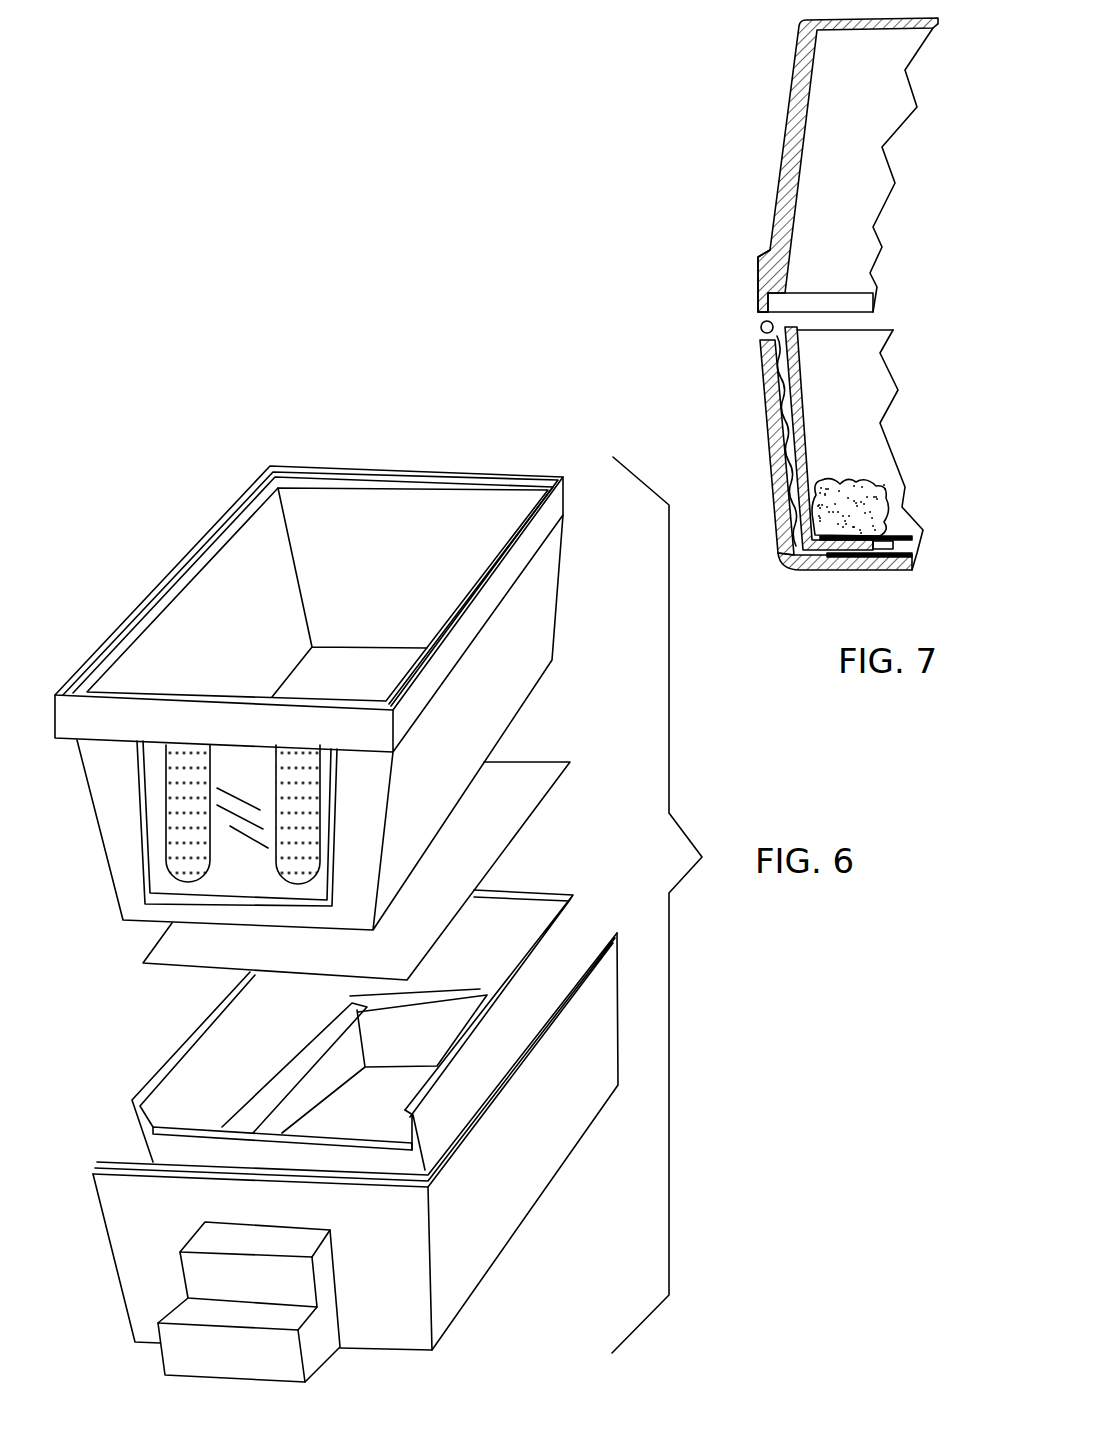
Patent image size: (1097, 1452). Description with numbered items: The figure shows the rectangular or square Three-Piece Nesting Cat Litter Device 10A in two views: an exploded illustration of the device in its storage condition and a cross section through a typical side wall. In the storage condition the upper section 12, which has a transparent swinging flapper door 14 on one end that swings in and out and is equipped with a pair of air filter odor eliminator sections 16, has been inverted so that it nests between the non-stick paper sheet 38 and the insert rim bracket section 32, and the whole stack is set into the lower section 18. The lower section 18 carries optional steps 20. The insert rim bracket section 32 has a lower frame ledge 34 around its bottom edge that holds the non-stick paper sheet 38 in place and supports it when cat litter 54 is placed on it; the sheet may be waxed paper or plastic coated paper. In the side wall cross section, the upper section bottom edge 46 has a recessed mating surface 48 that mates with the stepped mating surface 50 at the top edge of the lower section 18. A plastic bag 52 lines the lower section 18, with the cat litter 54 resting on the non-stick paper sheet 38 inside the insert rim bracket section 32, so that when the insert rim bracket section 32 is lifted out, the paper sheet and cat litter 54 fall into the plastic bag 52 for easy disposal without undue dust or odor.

In FIG. 6, the Three-Piece Nesting Cat Litter Device 10A is at (188, 490).
In FIG. 6, the upper section 12 is at (523, 613).
In FIG. 7, the upper section 12 is at (785, 132).
In FIG. 6, the transparent swinging flapper door 14 is at (232, 875).
In FIG. 6, the air filter odor eliminator sections 16 is at (165, 843).
In FIG. 6, the lower section 18 is at (528, 1125).
In FIG. 7, the lower section 18 is at (770, 433).
In FIG. 6, the steps 20 is at (198, 1320).
In FIG. 6, the insert rim bracket section 32 is at (502, 1028).
In FIG. 7, the insert rim bracket section 32 is at (802, 365).
In FIG. 6, the lower frame ledge 34 is at (263, 1103).
In FIG. 7, the lower frame ledge 34 is at (835, 570).
In FIG. 6, the non-stick paper sheet 38 is at (507, 790).
In FIG. 7, the non-stick paper sheet 38 is at (900, 533).
In FIG. 7, the upper section bottom edge 46 is at (758, 297).
In FIG. 7, the recessed mating surface 48 is at (812, 300).
In FIG. 7, the stepped mating surface 50 is at (762, 330).
In FIG. 7, the plastic bag 52 is at (753, 355).
In FIG. 7, the cat litter 54 is at (882, 500).